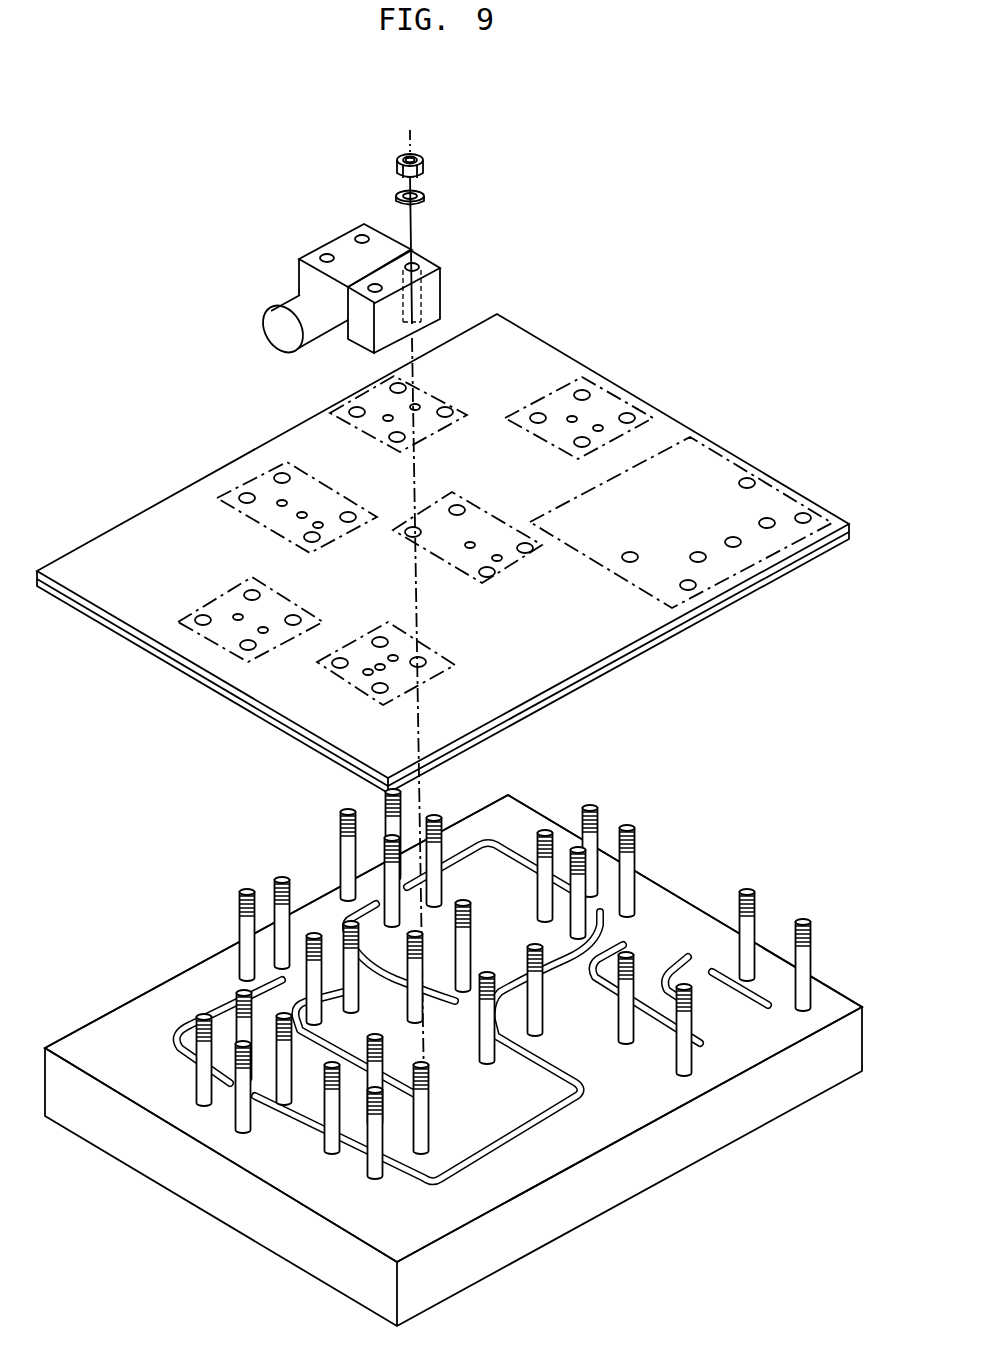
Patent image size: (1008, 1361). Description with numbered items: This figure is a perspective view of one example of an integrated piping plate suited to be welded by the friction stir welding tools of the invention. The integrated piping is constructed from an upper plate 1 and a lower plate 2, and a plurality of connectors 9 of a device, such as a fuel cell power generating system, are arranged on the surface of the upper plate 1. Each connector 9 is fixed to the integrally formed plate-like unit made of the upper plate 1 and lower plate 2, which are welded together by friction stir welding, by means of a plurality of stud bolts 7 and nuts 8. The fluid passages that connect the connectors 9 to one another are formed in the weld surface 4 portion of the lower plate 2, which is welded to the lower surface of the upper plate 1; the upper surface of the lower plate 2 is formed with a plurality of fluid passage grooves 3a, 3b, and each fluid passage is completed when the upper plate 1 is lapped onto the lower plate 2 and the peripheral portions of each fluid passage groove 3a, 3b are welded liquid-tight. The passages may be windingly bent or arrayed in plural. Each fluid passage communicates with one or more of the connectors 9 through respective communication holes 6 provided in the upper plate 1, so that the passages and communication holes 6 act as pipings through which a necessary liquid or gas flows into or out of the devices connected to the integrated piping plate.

The upper plate 1 is at (780, 568).
The lower plate 2 is at (640, 1167).
The fluid passage groove 3a is at (730, 1028).
The fluid passage groove 3b is at (525, 1145).
The weld surface 4 is at (645, 1082).
The communication hole 6 is at (597, 428).
The stud bolt 7 is at (627, 868).
The nut 8 is at (424, 160).
The connector 9 is at (415, 262).